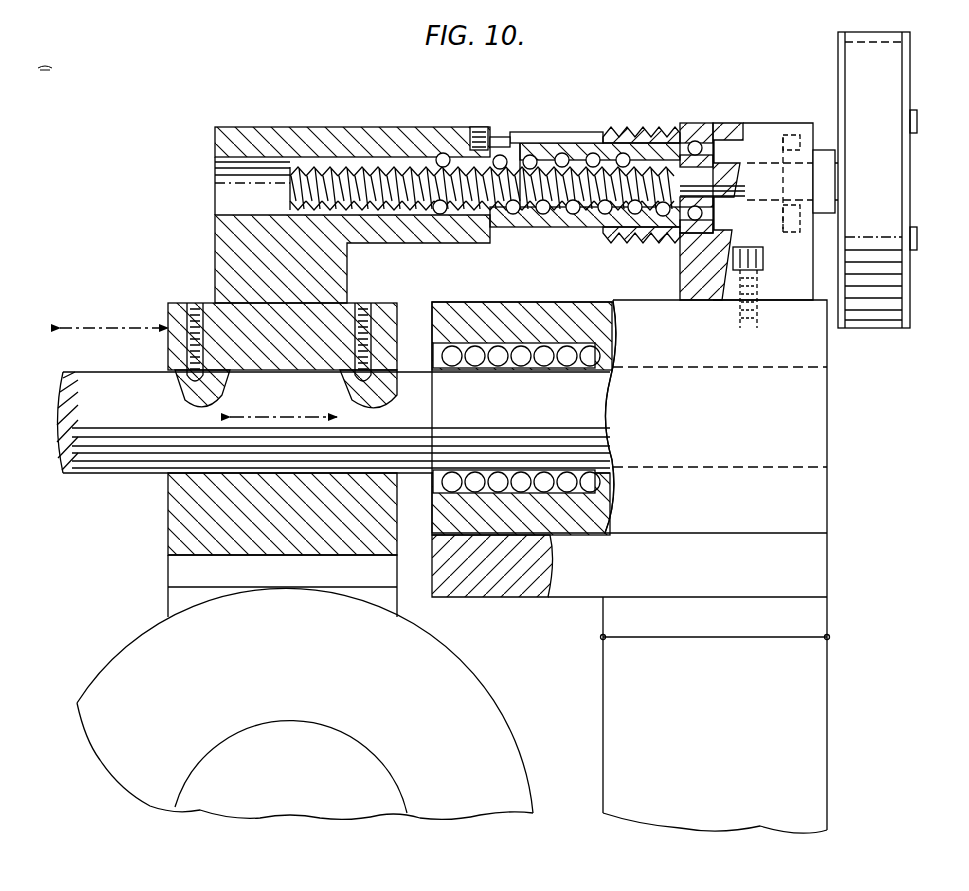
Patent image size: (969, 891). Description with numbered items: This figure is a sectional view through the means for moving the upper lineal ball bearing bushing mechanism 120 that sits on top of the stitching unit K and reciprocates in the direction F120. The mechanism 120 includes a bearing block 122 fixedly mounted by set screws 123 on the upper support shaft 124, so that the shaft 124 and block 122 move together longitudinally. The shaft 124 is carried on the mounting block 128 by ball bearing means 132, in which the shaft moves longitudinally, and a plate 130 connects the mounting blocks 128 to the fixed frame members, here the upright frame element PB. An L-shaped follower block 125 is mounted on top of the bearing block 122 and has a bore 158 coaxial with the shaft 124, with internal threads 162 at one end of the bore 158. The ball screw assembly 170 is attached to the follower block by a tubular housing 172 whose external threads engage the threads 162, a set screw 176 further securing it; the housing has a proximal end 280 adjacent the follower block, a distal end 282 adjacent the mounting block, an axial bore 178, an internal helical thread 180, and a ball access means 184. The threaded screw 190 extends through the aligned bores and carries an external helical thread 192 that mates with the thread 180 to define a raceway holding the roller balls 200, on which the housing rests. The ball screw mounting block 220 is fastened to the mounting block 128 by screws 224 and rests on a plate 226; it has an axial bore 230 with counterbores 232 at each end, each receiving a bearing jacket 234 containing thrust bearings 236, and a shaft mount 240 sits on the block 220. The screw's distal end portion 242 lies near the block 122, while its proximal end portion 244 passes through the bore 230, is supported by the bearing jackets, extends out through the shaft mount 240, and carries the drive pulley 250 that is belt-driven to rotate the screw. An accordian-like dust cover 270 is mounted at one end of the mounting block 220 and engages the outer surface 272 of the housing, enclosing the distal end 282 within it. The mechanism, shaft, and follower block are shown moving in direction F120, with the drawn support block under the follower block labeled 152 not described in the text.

The L-shaped follower block 125 is at (238, 122).
The distal end portion 242 is at (300, 168).
The internal threads 162 is at (438, 155).
The proximal end 280 is at (468, 138).
The set screw 176 is at (478, 128).
The ball access means 184 is at (500, 134).
The tubular housing 172 is at (525, 158).
The roller balls 200 is at (562, 156).
The ball screw assembly 170 is at (580, 126).
The accordian-like dust cover 270 is at (614, 128).
The internal helical thread 180 is at (637, 130).
The counterbores 232 is at (686, 140).
The ball screw mounting block 220 is at (712, 130).
The proximal end portion 244 is at (752, 160).
The drive pulley 250 is at (838, 42).
The shaft mount 240 is at (822, 150).
The thrust bearings 236 is at (694, 205).
The axial bore 230 is at (772, 222).
The bore 158 is at (218, 178).
The support block 152 is at (222, 258).
The set screws 123 is at (190, 300).
The bearing block 122 is at (170, 305).
The upper lineal ball bearing bushing mechanism 120 is at (380, 315).
The threaded screw 190 is at (400, 208).
The external helical thread 192 is at (426, 210).
The axial bore 178 is at (520, 216).
The outer surface 272 is at (533, 223).
The distal end 282 is at (626, 240).
The bearing jacket 234 is at (672, 241).
The screws 224 is at (740, 280).
The plate 226 is at (788, 292).
The upper support shaft 124 is at (120, 455).
The ball bearing means 132 is at (580, 508).
The mounting blocks 128 is at (463, 582).
The plate 130 is at (812, 615).
The upright frame element PB is at (808, 702).
The stitching unit K is at (495, 672).
The direction of movement F120 is at (136, 336).